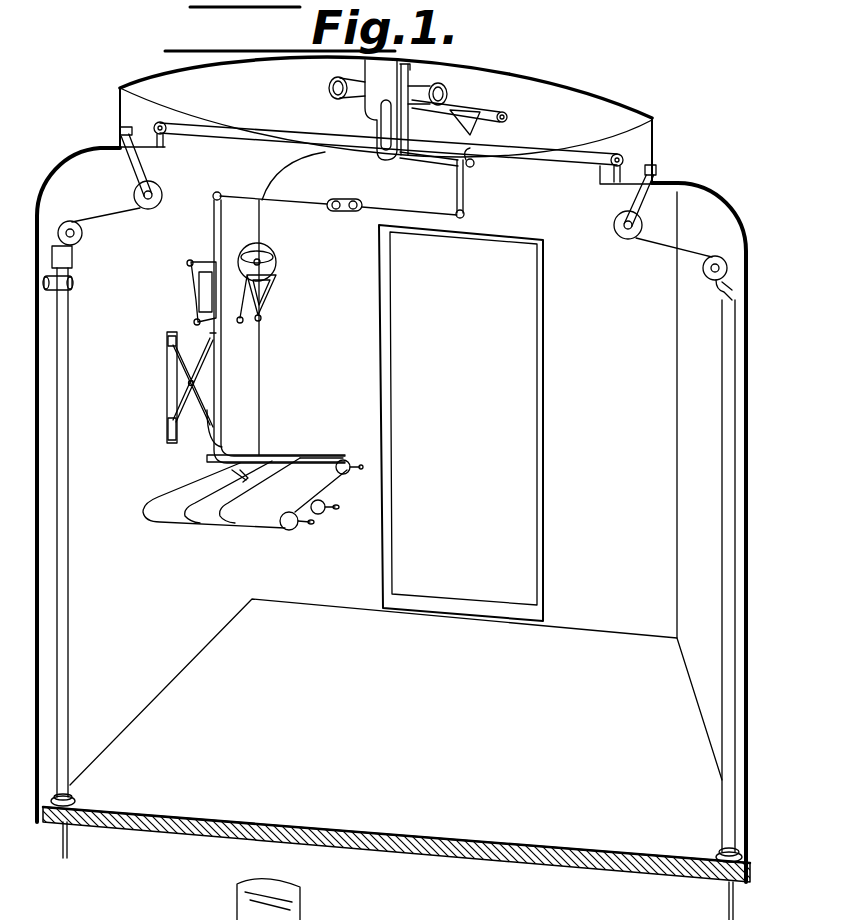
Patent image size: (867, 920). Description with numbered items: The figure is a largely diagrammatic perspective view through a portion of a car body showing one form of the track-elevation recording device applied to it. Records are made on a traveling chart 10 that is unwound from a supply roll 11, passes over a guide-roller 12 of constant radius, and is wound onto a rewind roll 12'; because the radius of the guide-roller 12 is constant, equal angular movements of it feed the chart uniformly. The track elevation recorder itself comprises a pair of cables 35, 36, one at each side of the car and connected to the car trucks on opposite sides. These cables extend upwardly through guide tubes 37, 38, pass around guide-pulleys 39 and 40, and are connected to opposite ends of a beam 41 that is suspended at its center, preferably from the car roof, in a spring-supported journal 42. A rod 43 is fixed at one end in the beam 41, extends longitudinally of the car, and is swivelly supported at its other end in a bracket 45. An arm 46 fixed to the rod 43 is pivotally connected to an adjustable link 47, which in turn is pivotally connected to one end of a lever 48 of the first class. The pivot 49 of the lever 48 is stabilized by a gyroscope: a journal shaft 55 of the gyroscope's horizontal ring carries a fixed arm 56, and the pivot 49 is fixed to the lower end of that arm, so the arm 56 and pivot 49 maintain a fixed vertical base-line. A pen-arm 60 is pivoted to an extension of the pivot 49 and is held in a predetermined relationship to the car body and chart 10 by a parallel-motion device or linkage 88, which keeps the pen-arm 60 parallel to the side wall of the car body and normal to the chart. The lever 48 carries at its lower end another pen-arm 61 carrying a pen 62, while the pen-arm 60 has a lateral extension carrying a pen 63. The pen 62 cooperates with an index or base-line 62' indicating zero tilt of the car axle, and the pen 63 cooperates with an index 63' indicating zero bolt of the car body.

The traveling chart 10 is at (148, 512).
The supply roll 11 is at (347, 460).
The guide-roller 12 is at (293, 540).
The rewind roll 12' is at (336, 517).
The cable 35 is at (62, 849).
The cable 36 is at (740, 905).
The guide tube 37 is at (70, 567).
The guide tube 38 is at (722, 517).
The guide-pulley 39 is at (78, 240).
The guide-pulley 40 is at (133, 197).
The beam 41 is at (275, 130).
The spring-supported journal 42 is at (388, 162).
The rod 43 is at (441, 158).
The bracket 45 is at (475, 125).
The arm 46 is at (463, 194).
The adjustable link 47 is at (306, 203).
The lever 48 is at (214, 229).
The pivot 49 is at (243, 327).
The journal shaft 55 is at (226, 268).
The arm 56 is at (232, 324).
The pen-arm 60 is at (218, 400).
The pen-arm 61 is at (267, 452).
The pen 62 is at (314, 467).
The index or base-line 62' is at (252, 509).
The pen 63 is at (223, 482).
The index 63' is at (210, 509).
The parallel-motion device or linkage 88 is at (177, 387).